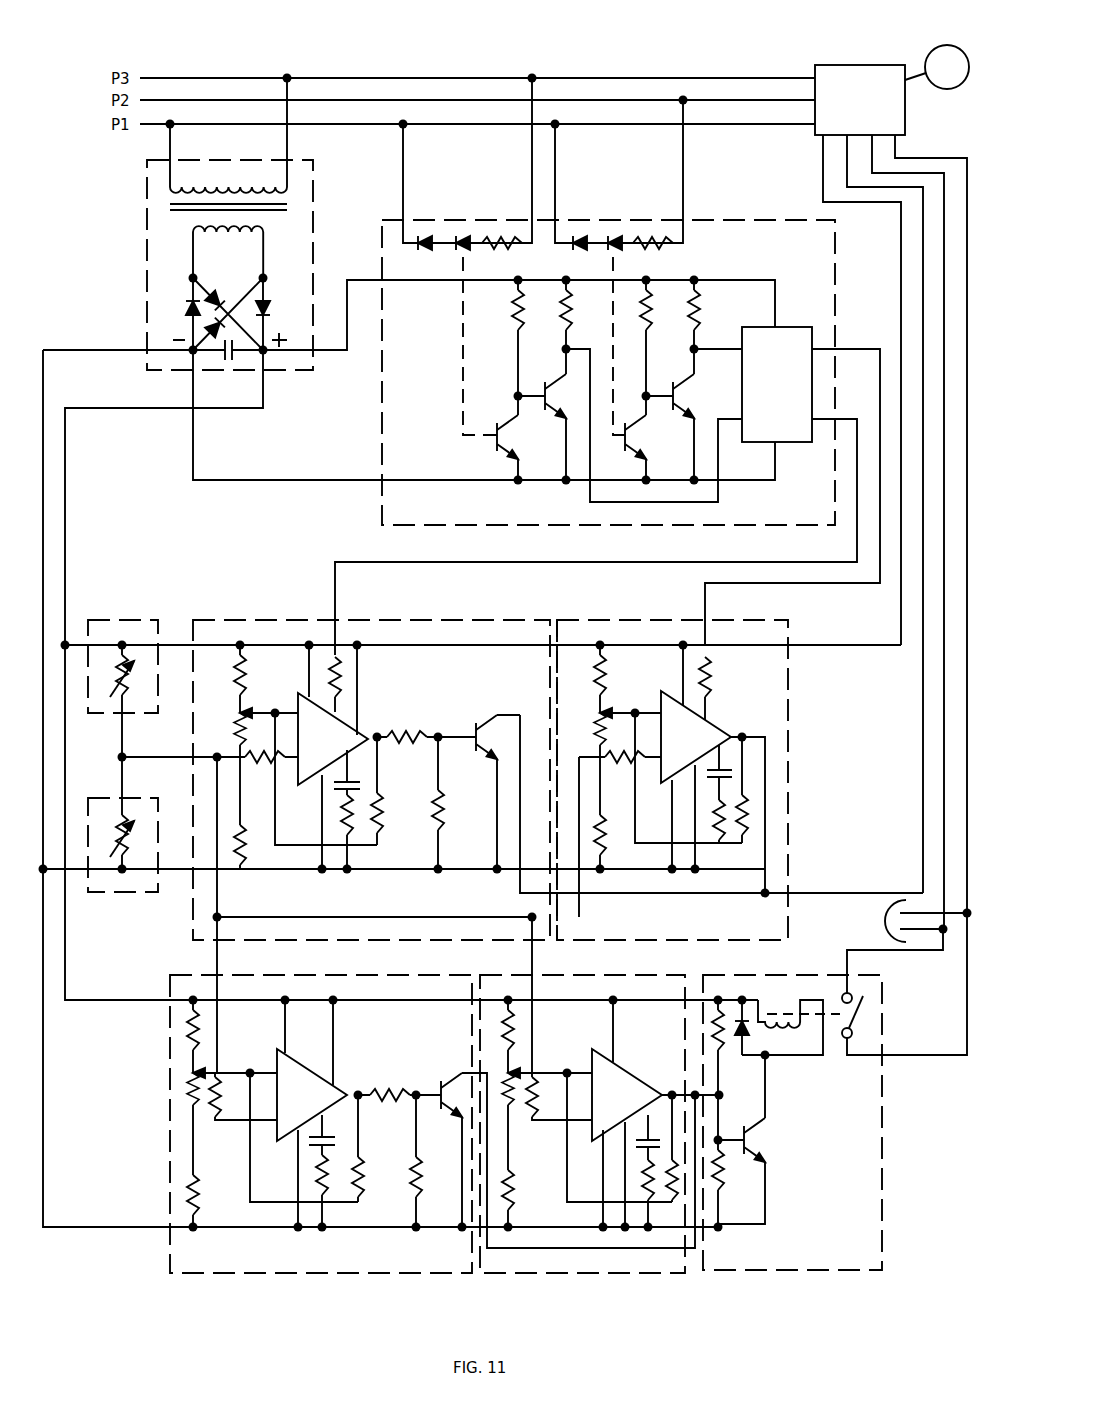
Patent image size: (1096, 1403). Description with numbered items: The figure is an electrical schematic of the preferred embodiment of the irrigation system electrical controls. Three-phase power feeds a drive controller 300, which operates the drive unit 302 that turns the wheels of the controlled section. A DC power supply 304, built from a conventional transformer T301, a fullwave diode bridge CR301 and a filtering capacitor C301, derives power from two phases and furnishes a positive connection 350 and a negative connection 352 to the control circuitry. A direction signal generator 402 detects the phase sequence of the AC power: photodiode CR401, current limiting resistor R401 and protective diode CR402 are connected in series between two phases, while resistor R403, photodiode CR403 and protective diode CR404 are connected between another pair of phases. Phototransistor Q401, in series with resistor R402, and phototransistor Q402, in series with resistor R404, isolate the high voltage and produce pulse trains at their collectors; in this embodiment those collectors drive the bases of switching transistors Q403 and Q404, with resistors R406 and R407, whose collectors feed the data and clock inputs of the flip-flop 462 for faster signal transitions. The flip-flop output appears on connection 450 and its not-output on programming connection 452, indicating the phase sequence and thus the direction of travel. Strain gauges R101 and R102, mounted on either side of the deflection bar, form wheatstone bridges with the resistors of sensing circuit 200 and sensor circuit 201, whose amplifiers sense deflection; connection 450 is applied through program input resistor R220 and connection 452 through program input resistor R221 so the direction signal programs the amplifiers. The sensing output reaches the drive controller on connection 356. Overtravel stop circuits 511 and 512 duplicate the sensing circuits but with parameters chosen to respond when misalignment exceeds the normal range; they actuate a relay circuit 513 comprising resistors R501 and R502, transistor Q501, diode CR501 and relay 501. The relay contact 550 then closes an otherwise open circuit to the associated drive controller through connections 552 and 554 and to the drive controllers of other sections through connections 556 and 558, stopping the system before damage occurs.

The drive controller 300 is at (860, 68).
The drive unit 302 is at (937, 99).
The DC power supply 304 is at (185, 265).
The transformer T301 is at (228, 178).
The fullwave diode bridge CR301 is at (252, 314).
The filtering capacitor C301 is at (234, 354).
The positive connection 350 is at (322, 352).
The negative connection 352 is at (135, 351).
The drive controller connection 356 is at (815, 893).
The direction signal generator 402 is at (606, 386).
The photodiode CR401 is at (462, 252).
The protective diode CR402 is at (404, 255).
The photodiode CR403 is at (616, 238).
The protective diode CR404 is at (560, 255).
The current limiting resistor R401 is at (504, 255).
The resistor R402 is at (496, 338).
The resistor R403 is at (659, 255).
The resistor R404 is at (663, 338).
The resistor R406 is at (586, 314).
The resistor R407 is at (714, 314).
The phototransistor Q401 is at (522, 438).
The phototransistor Q402 is at (650, 438).
The switching transistor Q403 is at (556, 414).
The switching transistor Q404 is at (685, 414).
The flip-flop 462 is at (777, 384).
The direction signal connection 450 is at (843, 353).
The programming connection 452 is at (836, 416).
The strain gauge R101 is at (121, 658).
The strain gauge R102 is at (121, 855).
The sensor circuit 201 is at (375, 792).
The sensing circuit 200 is at (676, 792).
The program input resistor R221 is at (340, 680).
The program input resistor R220 is at (727, 688).
The connection 556 is at (892, 906).
The connection 558 is at (892, 938).
The connection 552 is at (895, 951).
The connection 554 is at (900, 1057).
The relay contact 550 is at (863, 1015).
The overtravel stop circuit 511 is at (319, 1153).
The overtravel stop circuit 512 is at (582, 1153).
The relay circuit 513 is at (792, 1153).
The relay 501 is at (791, 1029).
The diode CR501 is at (766, 1017).
The resistor R501 is at (720, 1050).
The resistor R502 is at (739, 1183).
The transistor Q501 is at (755, 1139).